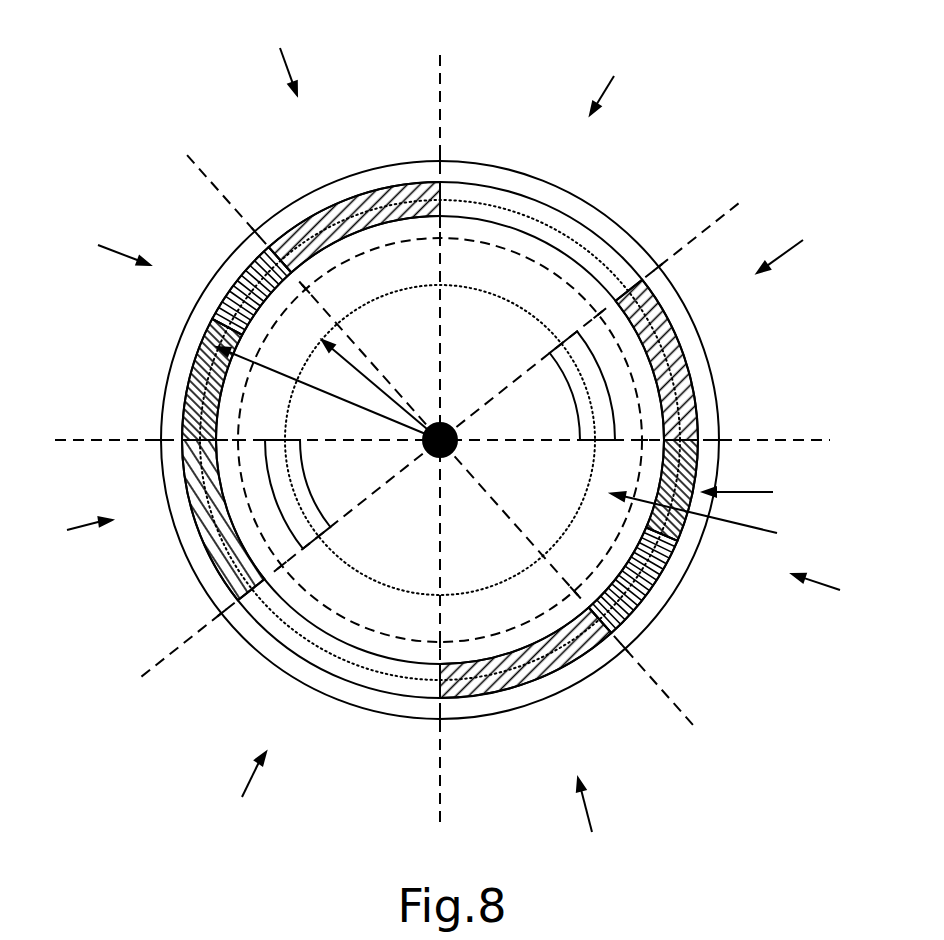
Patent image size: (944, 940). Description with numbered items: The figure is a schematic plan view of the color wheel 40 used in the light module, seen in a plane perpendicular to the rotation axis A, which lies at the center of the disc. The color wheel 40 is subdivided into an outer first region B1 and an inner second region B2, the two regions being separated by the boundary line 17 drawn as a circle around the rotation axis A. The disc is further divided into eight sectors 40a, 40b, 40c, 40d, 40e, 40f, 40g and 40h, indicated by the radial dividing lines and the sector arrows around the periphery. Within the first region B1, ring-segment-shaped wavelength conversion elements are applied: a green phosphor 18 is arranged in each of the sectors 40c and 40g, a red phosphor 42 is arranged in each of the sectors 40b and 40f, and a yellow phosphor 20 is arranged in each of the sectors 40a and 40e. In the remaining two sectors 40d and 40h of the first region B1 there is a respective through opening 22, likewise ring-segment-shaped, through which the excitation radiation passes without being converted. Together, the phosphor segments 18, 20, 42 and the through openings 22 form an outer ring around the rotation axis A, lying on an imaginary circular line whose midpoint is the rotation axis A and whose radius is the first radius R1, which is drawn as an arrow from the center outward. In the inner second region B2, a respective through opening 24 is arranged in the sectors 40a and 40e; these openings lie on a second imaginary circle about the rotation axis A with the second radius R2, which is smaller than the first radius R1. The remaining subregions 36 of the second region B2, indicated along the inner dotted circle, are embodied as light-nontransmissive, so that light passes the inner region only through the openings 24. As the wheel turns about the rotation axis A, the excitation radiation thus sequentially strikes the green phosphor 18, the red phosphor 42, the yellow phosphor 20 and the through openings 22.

The color wheel 40 is at (195, 103).
The sector 40a is at (800, 241).
The sector 40b is at (837, 595).
The sector 40c is at (596, 818).
The sector 40d is at (239, 789).
The sector 40e is at (62, 528).
The sector 40f is at (100, 243).
The sector 40g is at (283, 57).
The sector 40h is at (612, 80).
The boundary line 17 is at (483, 238).
The green phosphor 18 is at (315, 217).
The yellow phosphor 20 is at (688, 388).
The through opening 22 is at (602, 248).
The through opening 24 is at (602, 394).
The subregion 36 is at (410, 307).
The red phosphor 42 is at (220, 303).
The rotation axis A is at (447, 424).
The first radius R1 is at (291, 371).
The second radius R2 is at (394, 382).
The first region B1 is at (757, 495).
The second region B2 is at (713, 521).